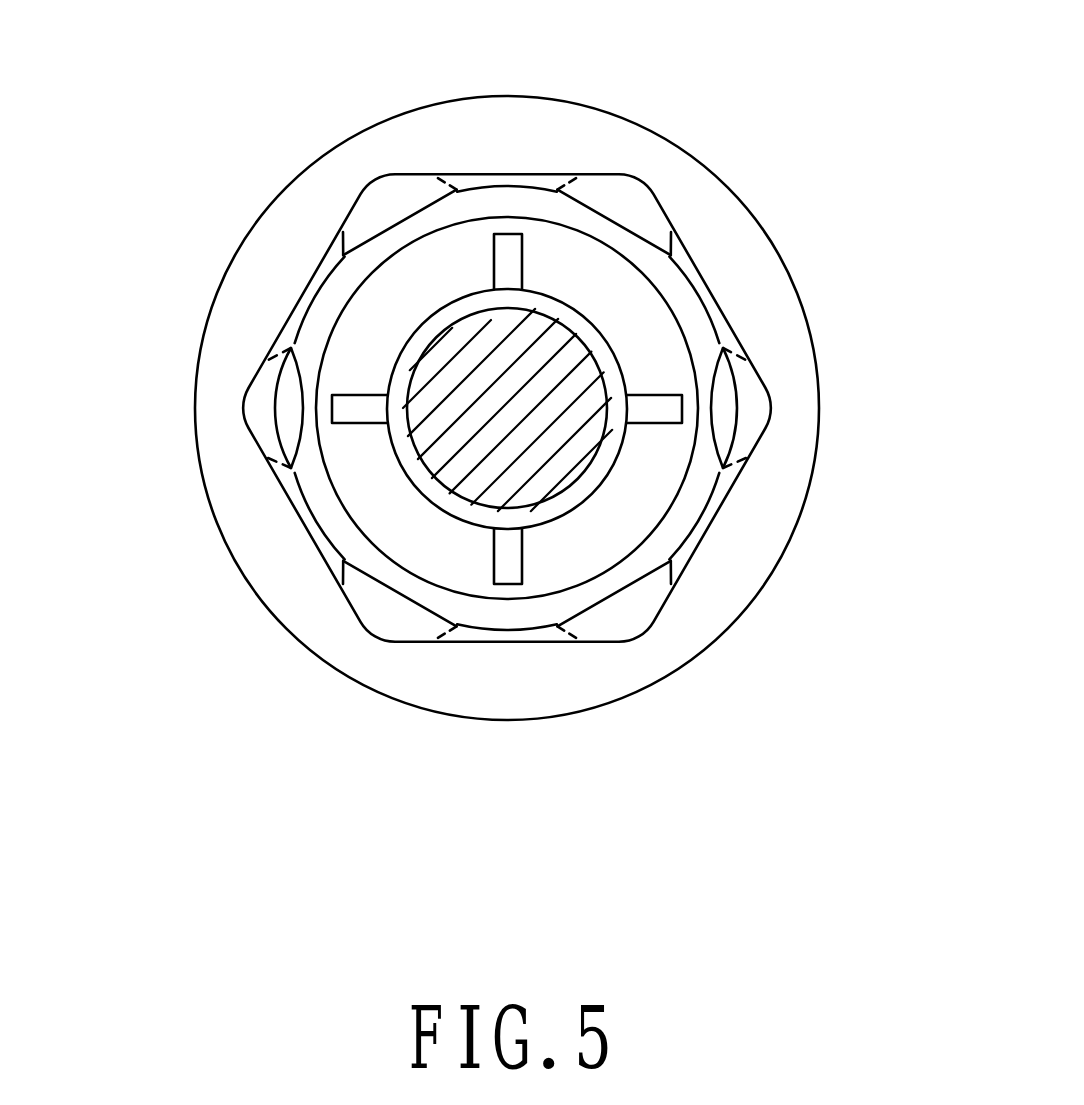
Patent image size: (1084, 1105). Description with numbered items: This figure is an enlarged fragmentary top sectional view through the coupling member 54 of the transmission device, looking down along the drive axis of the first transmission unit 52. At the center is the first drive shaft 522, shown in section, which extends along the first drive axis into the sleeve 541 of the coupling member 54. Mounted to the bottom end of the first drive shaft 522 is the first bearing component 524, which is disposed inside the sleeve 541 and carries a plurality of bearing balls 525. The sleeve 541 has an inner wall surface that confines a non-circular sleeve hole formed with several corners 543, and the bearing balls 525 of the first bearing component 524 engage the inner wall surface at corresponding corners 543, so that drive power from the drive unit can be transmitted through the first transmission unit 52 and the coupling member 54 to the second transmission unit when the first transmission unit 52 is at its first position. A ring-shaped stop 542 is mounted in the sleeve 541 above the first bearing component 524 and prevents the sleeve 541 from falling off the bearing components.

The first transmission unit 52 is at (626, 513).
The first drive shaft 522 is at (582, 443).
The first bearing component 524 is at (672, 378).
The bearing balls 525 is at (265, 402).
The coupling member 54 is at (248, 226).
The sleeve 541 is at (740, 251).
The stop 542 is at (683, 243).
The corners 543 is at (262, 397).